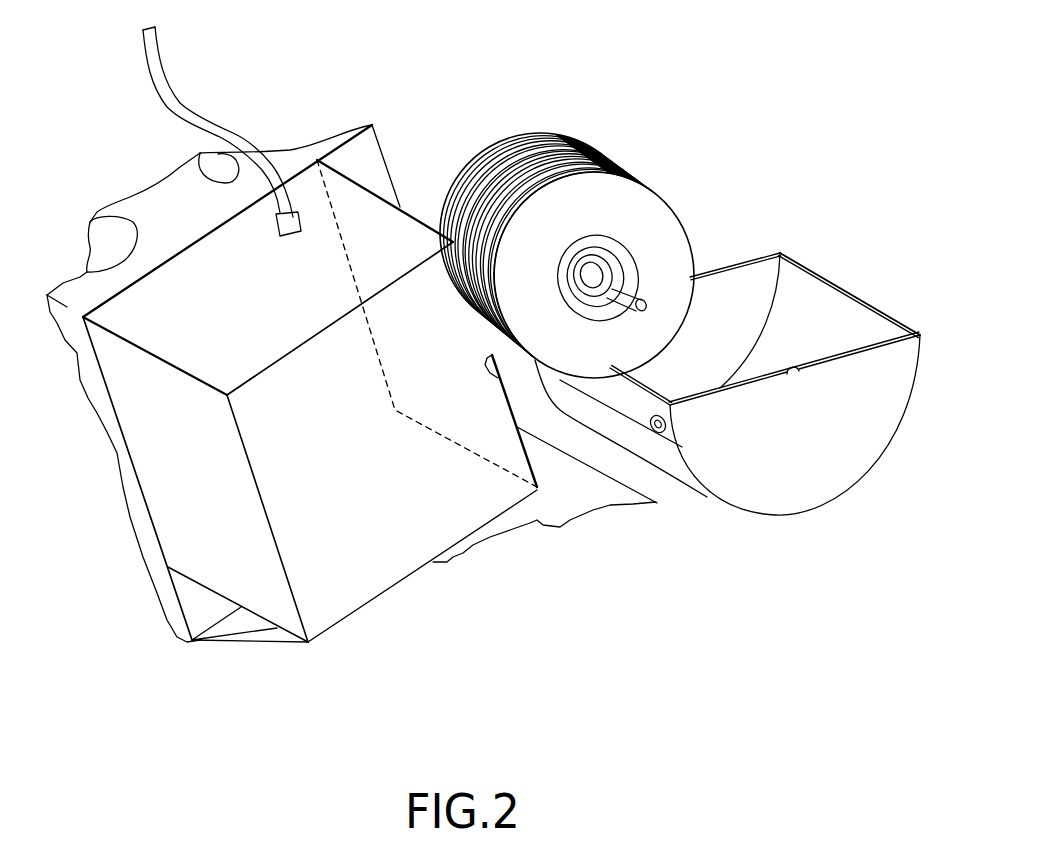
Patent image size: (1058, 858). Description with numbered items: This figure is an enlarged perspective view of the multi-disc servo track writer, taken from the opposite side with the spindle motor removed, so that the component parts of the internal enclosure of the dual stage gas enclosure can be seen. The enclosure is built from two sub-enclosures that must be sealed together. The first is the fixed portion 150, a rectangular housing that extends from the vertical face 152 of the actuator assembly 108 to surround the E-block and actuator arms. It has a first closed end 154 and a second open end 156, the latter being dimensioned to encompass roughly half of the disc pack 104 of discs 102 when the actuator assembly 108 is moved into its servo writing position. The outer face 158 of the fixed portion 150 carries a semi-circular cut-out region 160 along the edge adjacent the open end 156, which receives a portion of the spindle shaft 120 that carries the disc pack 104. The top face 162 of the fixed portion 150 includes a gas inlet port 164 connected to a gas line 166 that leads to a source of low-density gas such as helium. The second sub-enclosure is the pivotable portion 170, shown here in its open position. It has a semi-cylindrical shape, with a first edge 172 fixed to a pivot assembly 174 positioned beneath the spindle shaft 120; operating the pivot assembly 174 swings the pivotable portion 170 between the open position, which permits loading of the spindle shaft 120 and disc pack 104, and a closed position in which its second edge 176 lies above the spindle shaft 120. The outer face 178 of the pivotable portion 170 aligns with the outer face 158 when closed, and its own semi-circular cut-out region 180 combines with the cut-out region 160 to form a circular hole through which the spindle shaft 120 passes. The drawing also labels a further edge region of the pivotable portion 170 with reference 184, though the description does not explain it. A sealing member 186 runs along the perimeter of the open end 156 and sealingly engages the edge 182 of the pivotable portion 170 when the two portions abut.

The disc 102 is at (650, 198).
The disc pack 104 is at (600, 147).
The actuator assembly 108 is at (137, 207).
The spindle shaft 120 is at (630, 290).
The fixed portion 150 is at (140, 437).
The vertical face 152 is at (367, 137).
The first closed end 154 is at (232, 562).
The second open end 156 is at (367, 187).
The outer face 158 is at (347, 602).
The semi-circular cut-out region 160 is at (487, 370).
The top face 162 is at (225, 352).
The gas inlet port 164 is at (280, 233).
The gas line 166 is at (157, 50).
The pivotable portion 170 is at (711, 537).
The first edge 172 is at (640, 390).
The pivot assembly 174 is at (633, 407).
The second edge 176 is at (883, 323).
The outer face 178 is at (793, 497).
The semi-circular cut-out region 180 is at (797, 374).
The edge 182 is at (760, 270).
The rear rim 184 is at (768, 274).
The sealing member 186 is at (385, 378).